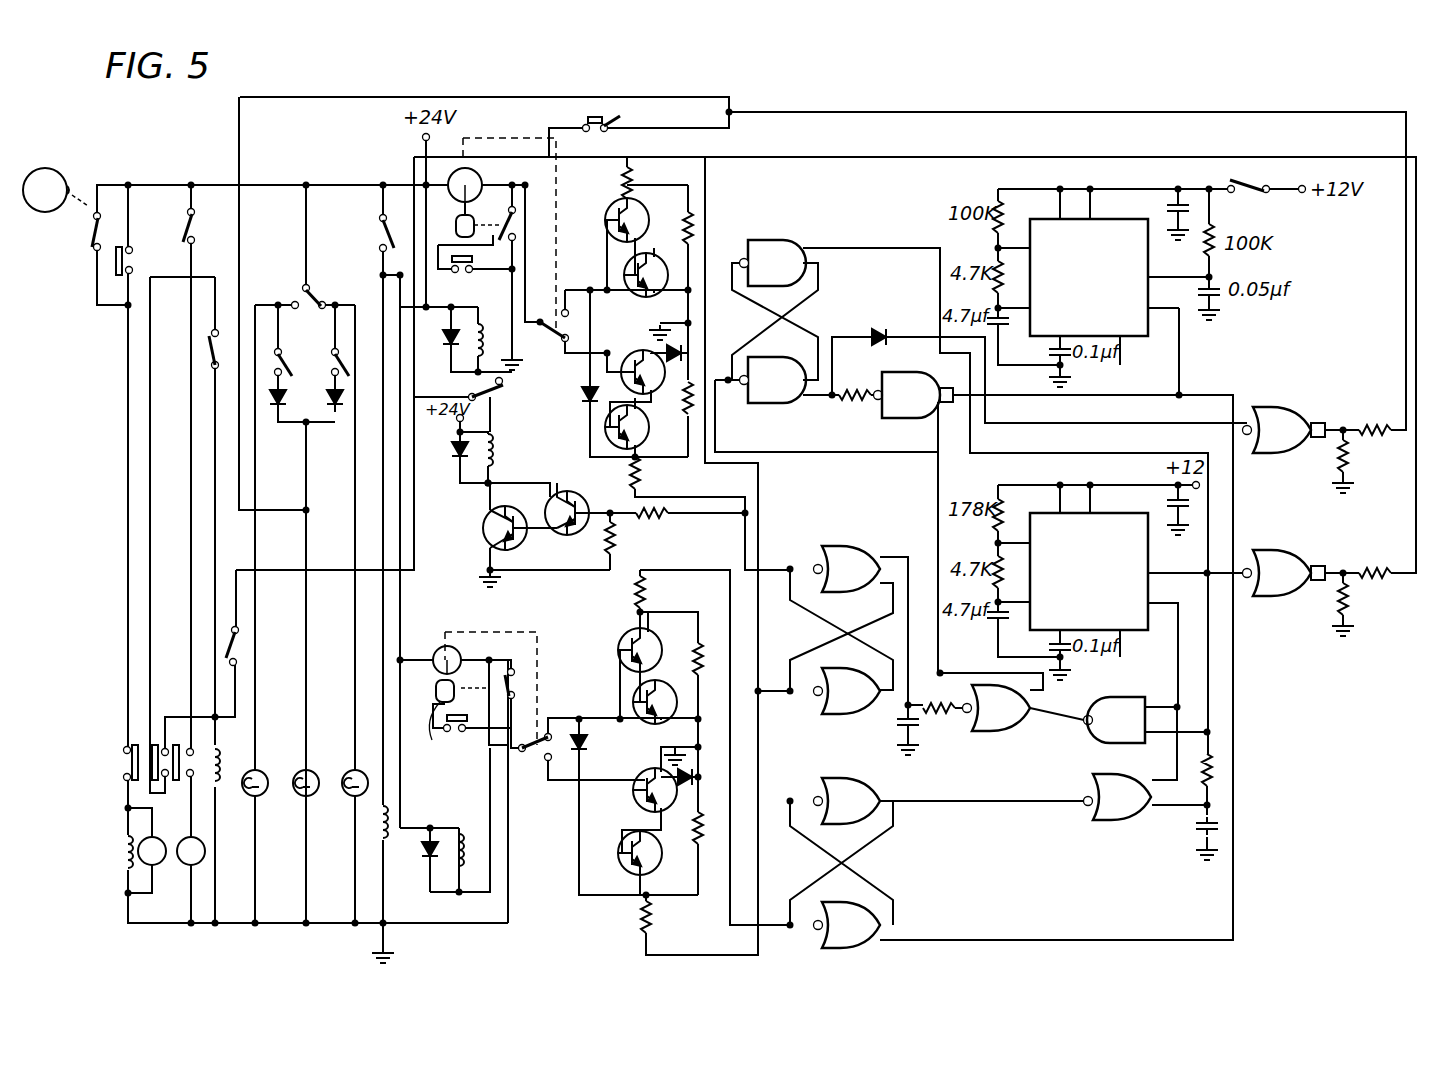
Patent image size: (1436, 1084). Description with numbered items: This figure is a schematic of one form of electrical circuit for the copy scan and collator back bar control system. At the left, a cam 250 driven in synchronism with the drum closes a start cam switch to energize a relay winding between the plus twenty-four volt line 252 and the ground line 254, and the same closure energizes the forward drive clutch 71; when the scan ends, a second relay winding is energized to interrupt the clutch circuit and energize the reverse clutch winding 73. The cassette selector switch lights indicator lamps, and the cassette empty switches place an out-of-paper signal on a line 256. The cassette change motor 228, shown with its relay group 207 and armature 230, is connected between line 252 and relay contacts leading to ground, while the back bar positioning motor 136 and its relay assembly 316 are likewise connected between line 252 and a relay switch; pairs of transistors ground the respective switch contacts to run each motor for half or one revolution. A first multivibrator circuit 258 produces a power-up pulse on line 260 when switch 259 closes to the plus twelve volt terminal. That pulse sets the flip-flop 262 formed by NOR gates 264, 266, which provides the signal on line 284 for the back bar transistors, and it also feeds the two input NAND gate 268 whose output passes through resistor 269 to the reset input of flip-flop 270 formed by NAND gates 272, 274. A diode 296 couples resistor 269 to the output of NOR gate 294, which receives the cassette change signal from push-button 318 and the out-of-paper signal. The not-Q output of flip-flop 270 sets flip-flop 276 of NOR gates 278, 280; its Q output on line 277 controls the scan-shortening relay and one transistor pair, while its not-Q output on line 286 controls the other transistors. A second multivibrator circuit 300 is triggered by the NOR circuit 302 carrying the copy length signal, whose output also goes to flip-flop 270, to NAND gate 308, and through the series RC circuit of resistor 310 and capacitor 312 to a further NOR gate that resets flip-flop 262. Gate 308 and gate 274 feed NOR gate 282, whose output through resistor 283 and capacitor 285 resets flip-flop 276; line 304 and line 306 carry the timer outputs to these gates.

The cam 250 is at (62, 204).
The plus 24 volt line 252 is at (296, 178).
The ground line 254 is at (308, 925).
The out-of-paper signal line 256 is at (531, 100).
The 555 multivibrator circuit 258 is at (1122, 200).
The switch 259 is at (1256, 196).
The line 260 is at (1180, 364).
The set-reset flip-flop 262 is at (826, 782).
The NOR gate 264 is at (880, 784).
The NOR gate 266 is at (868, 947).
The two input NAND gate 268 is at (936, 406).
The resistor 269 is at (860, 402).
The set-reset flip-flop 270 is at (800, 236).
The NAND gate 272 is at (768, 239).
The NAND gate 274 is at (774, 404).
The set-reset flip-flop 276 is at (815, 532).
The line 277 is at (708, 488).
The two input NOR gate 278 is at (862, 548).
The two input NOR gate 280 is at (838, 682).
The NOR gate 282 is at (998, 726).
The resistor 283 is at (944, 710).
The line 284 is at (700, 570).
The capacitor 285 is at (898, 722).
The line 286 is at (676, 954).
The two input NOR gate 294 is at (1292, 407).
The diode 296 is at (880, 327).
The second 555 multivibrator circuit 300 is at (1104, 512).
The two input NOR circuit 302 is at (1290, 550).
The conductor line 304 is at (1210, 540).
The conductor line 306 is at (1178, 662).
The two input NAND circuit 308 is at (1118, 698).
The resistor 310 is at (1215, 765).
The capacitor 312 is at (1220, 828).
The relay assembly 316 is at (514, 626).
The push-button 318 is at (612, 120).
The relay assembly 207 is at (556, 198).
The cassette change motor 228 is at (480, 176).
The relay armature 230 is at (464, 221).
The back bar positioning motor 136 is at (434, 650).
The forward drive clutch 71 is at (154, 860).
The reverse clutch winding 73 is at (205, 852).